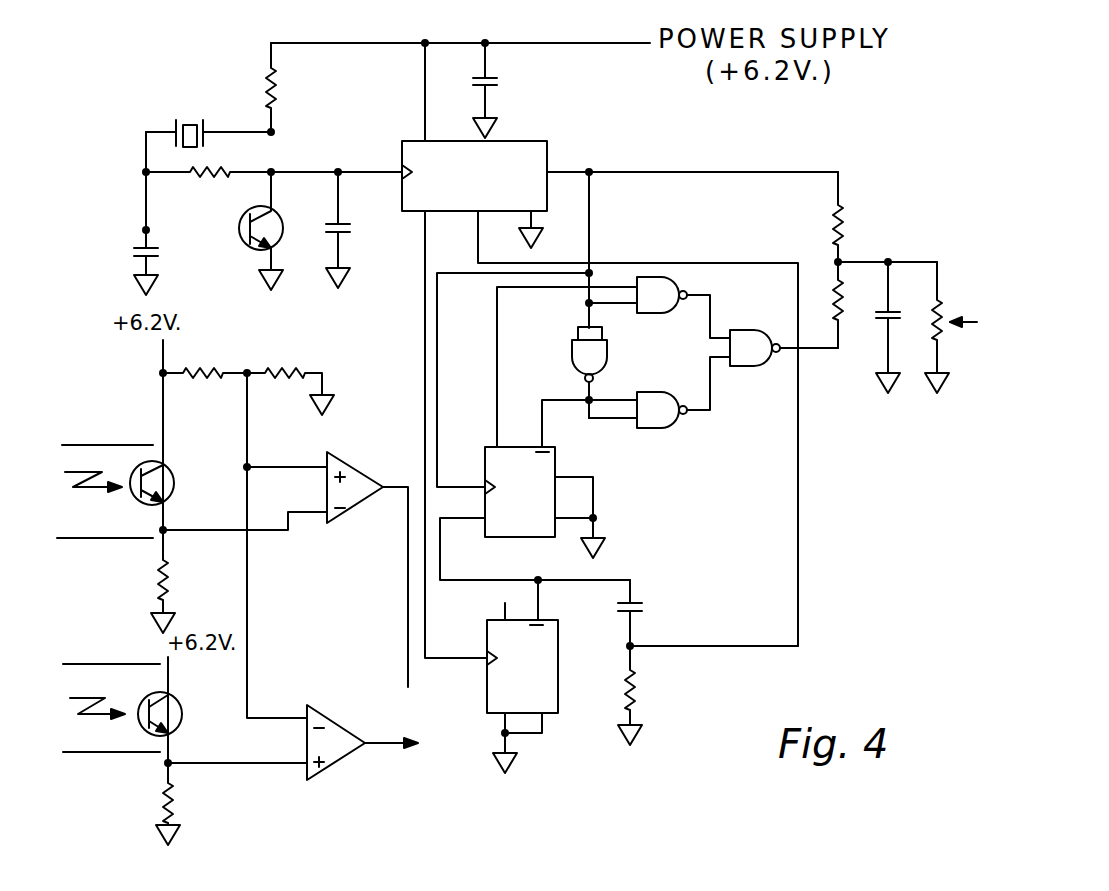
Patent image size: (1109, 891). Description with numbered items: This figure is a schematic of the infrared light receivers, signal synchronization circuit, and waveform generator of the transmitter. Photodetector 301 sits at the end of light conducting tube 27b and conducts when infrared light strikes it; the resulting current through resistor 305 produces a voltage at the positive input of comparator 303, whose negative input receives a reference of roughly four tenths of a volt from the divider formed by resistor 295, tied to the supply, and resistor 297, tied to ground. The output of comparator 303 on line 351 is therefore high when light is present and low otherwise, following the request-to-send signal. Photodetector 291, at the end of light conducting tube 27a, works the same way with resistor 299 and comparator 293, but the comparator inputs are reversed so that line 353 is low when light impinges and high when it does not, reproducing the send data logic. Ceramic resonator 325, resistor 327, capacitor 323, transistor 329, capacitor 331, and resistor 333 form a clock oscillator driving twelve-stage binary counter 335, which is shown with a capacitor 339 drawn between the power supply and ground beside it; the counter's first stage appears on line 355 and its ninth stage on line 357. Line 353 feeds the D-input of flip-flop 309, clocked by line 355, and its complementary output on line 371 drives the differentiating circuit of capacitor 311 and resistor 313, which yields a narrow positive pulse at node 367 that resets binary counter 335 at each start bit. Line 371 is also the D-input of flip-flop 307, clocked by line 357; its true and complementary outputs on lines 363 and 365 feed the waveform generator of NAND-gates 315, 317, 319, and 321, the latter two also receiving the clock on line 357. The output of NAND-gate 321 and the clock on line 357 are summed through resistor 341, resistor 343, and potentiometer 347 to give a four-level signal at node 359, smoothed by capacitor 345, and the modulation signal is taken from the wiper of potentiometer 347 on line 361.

The light conducting tube 27a is at (85, 540).
The light conducting tube 27b is at (93, 662).
The photodetector 291 is at (172, 470).
The comparator 293 is at (352, 466).
The resistor 295 is at (202, 372).
The resistor 297 is at (278, 378).
The resistor 299 is at (167, 582).
The photodetector 301 is at (182, 722).
The comparator 303 is at (336, 775).
The resistor 305 is at (174, 800).
The flip-flop 307 is at (537, 538).
The D-type flip-flop 309 is at (487, 700).
The capacitor 311 is at (642, 606).
The resistor 313 is at (640, 690).
The NAND-gate 315 is at (608, 355).
The NAND-gate 317 is at (650, 313).
The NAND-gate 319 is at (670, 428).
The NAND-gate 321 is at (752, 367).
The capacitor 323 is at (136, 250).
The ceramic resonator 325 is at (183, 123).
The resistor 327 is at (214, 176).
The transistor 329 is at (248, 250).
The capacitor 331 is at (350, 230).
The resistor 333 is at (268, 88).
The binary counter 335 is at (547, 146).
The capacitor 339 is at (498, 80).
The resistor 341 is at (834, 218).
The resistor 343 is at (835, 290).
The capacitor 345 is at (880, 322).
The potentiometer 347 is at (942, 332).
The line 351 is at (388, 748).
The line 353 is at (393, 490).
The line 355 is at (422, 377).
The line 357 is at (592, 176).
The node 359 is at (888, 260).
The line 361 is at (964, 315).
The line 363 is at (498, 342).
The line 365 is at (557, 398).
The node 367 is at (753, 647).
The line 371 is at (602, 580).